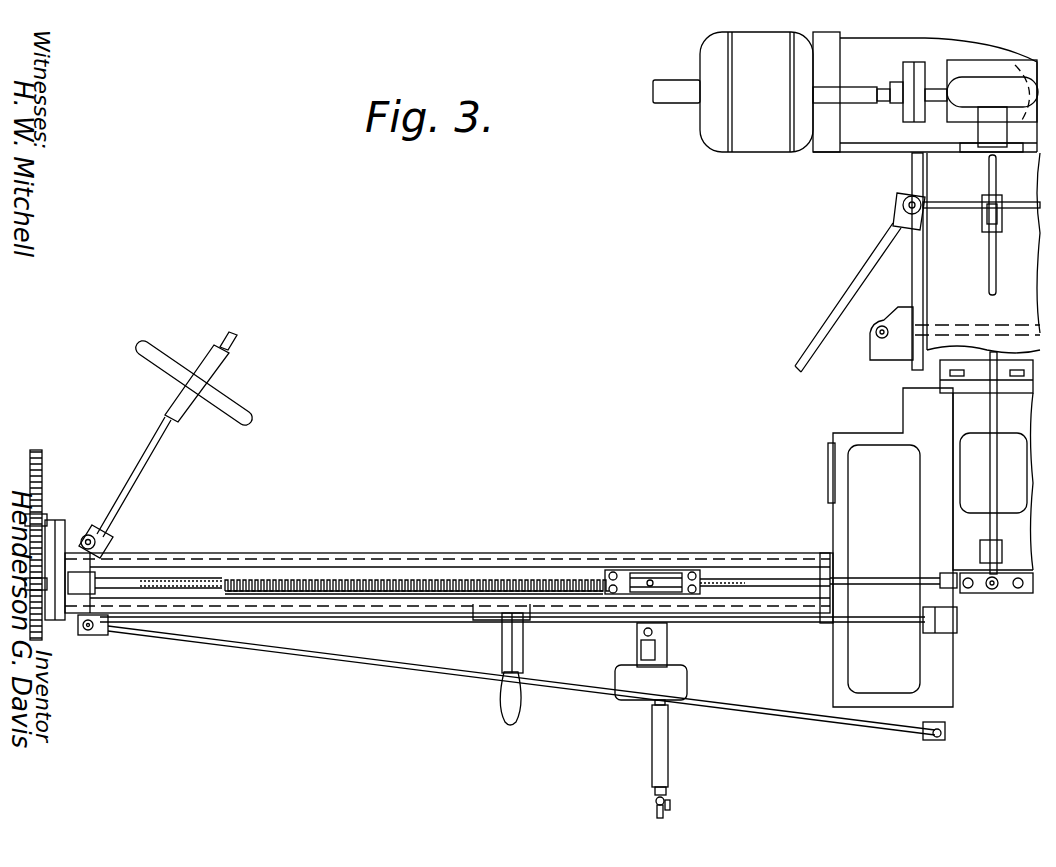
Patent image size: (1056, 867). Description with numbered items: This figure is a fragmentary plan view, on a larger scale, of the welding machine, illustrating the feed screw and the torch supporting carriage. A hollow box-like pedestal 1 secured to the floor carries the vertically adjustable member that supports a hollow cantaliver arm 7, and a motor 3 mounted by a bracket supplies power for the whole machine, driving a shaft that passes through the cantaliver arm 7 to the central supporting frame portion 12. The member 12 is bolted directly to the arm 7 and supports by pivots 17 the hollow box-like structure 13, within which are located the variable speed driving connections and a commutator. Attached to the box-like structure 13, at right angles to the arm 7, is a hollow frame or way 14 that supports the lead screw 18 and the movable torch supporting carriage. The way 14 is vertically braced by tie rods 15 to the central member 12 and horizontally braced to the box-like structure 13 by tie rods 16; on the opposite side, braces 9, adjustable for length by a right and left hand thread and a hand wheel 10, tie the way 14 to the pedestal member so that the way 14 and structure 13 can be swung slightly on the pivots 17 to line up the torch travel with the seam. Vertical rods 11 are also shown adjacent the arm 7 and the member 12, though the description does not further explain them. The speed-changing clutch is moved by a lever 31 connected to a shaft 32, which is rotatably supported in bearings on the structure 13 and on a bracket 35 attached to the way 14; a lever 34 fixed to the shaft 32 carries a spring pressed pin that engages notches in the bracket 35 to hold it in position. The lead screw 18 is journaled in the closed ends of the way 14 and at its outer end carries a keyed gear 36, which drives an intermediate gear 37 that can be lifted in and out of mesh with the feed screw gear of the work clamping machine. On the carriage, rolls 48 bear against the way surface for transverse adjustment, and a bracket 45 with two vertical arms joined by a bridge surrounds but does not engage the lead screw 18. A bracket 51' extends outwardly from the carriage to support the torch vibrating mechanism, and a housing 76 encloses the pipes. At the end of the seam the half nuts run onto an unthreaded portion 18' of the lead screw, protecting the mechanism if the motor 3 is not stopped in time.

The pedestal 1 is at (905, 340).
The motor 3 is at (762, 132).
The cantaliver arm 7 is at (955, 262).
The braces 9 is at (852, 283).
The hand wheel 10 is at (215, 390).
The vertical rod 11 is at (998, 262).
The central supporting frame portion 12 is at (975, 403).
The box-like structure 13 is at (868, 438).
The ways 14 is at (296, 553).
The tie rods 15 is at (866, 578).
The tie rods 16 is at (390, 660).
The pivots 17 is at (1000, 595).
The lead screw 18 is at (417, 552).
The unthreaded portion 18' is at (485, 587).
The lever 31 is at (935, 630).
The shaft 32 is at (793, 620).
The lever 34 is at (525, 648).
The bracket 35 is at (495, 622).
The gear 36 is at (45, 632).
The intermediate gear 37 is at (45, 462).
The bracket 45 is at (665, 572).
The rolls 48 is at (612, 572).
The bracket 51' is at (667, 661).
The housing 76 is at (660, 752).